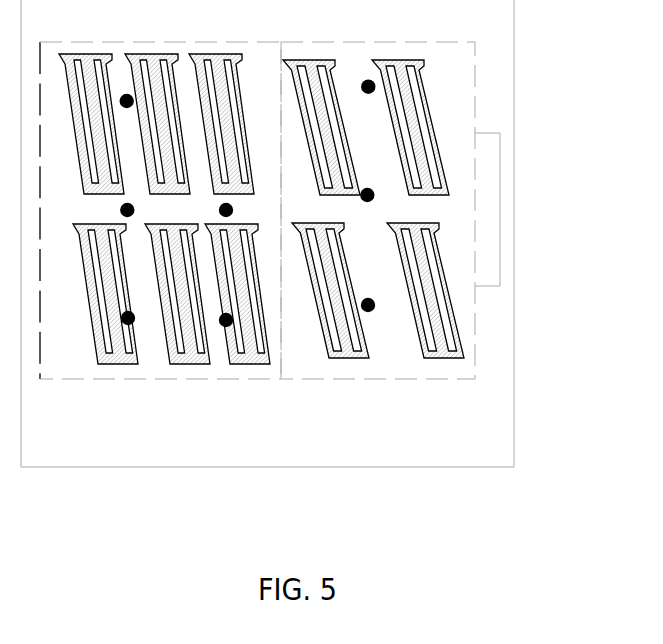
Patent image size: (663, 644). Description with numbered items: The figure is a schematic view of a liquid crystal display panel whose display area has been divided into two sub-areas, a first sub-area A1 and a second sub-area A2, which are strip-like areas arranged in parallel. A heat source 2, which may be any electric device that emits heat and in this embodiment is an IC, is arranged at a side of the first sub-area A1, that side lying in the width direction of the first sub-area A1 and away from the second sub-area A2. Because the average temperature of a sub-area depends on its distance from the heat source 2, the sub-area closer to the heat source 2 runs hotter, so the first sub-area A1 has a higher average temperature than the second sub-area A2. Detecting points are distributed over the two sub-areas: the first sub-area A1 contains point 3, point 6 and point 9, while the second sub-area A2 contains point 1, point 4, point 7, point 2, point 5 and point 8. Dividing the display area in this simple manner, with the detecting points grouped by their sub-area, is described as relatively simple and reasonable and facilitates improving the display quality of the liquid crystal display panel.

The heat source 2 is at (496, 147).
The first sub-area A1 is at (413, 355).
The second sub-area A2 is at (273, 378).
The point 1 is at (128, 126).
The point 3 is at (372, 110).
The point 4 is at (130, 235).
The point 5 is at (229, 235).
The point 6 is at (370, 218).
The point 7 is at (129, 340).
The point 8 is at (230, 341).
The point 9 is at (373, 327).